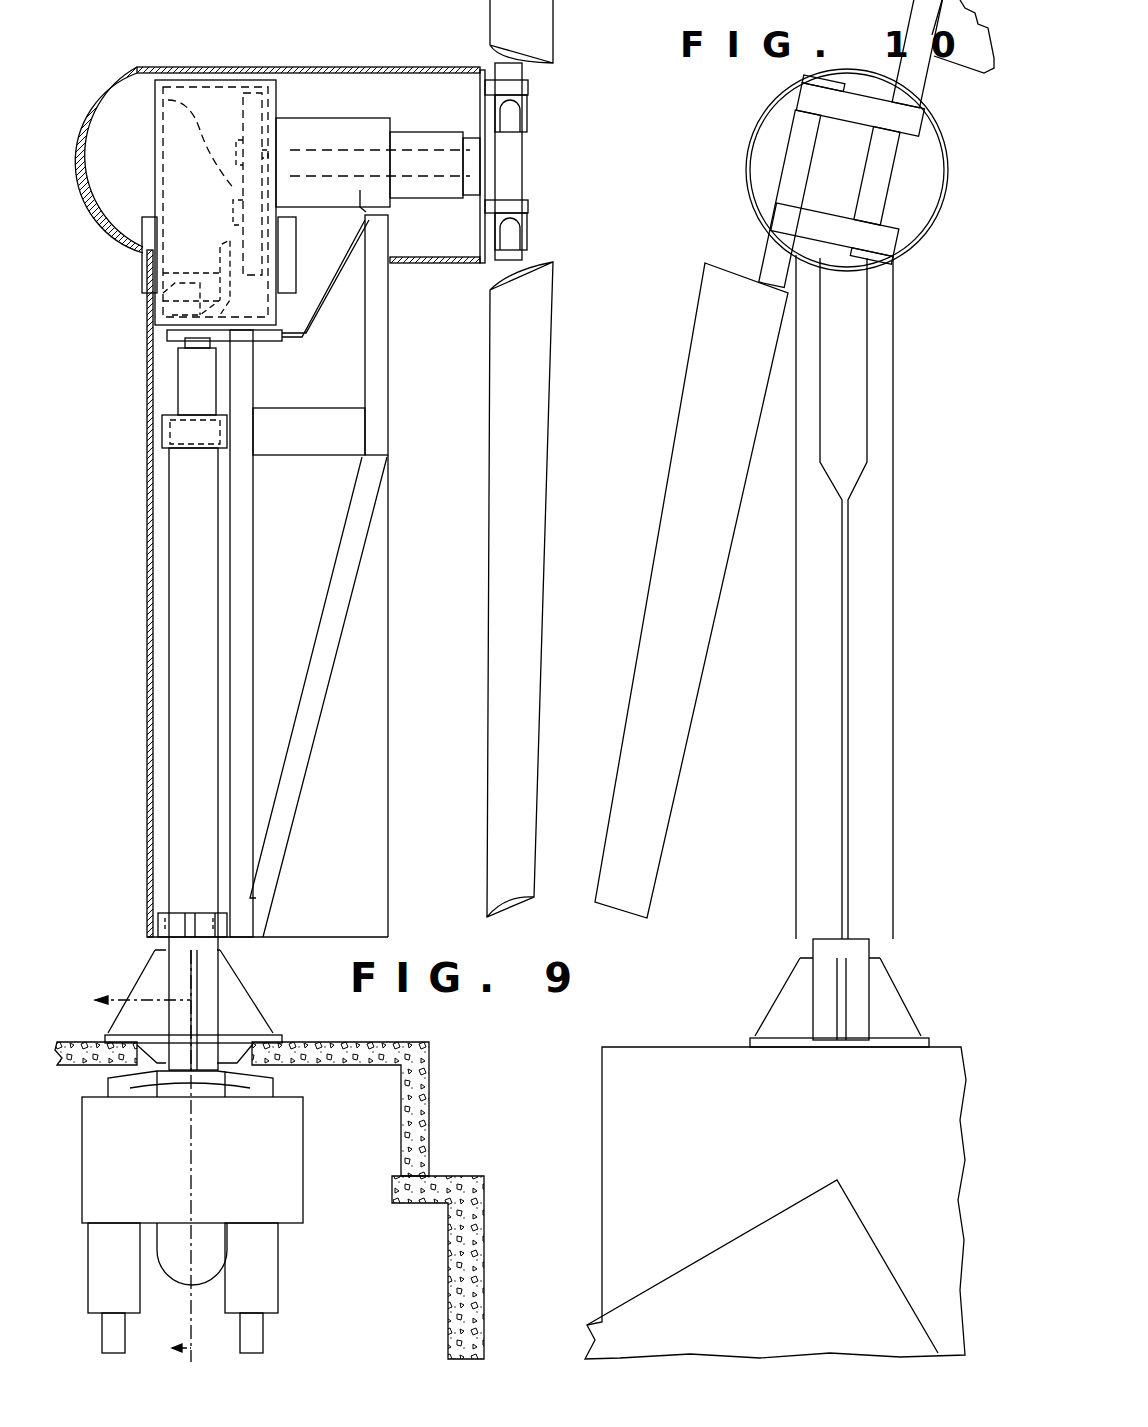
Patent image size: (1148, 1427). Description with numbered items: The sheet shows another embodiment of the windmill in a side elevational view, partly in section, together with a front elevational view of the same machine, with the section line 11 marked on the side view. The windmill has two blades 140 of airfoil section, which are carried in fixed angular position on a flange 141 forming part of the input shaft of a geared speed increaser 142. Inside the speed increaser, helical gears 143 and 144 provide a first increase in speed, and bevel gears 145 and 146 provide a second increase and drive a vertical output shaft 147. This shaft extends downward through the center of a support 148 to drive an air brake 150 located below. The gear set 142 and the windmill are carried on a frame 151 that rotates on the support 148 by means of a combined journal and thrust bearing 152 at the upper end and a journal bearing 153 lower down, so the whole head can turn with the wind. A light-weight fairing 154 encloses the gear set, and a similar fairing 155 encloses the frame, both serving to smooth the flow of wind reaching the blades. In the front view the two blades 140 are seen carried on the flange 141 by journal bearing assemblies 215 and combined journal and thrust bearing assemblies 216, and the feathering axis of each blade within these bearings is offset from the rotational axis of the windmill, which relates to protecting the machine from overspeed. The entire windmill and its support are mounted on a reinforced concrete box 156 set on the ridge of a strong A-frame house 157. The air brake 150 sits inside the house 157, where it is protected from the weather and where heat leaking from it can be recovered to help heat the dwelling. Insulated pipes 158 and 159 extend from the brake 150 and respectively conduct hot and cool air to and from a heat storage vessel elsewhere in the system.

In FIG. 9, the section line / axis 11 is at (126, 1158).
In FIG. 9, the blades 140 is at (553, 38).
In FIG. 10, the blades 140 is at (675, 800).
In FIG. 9, the flange 141 is at (480, 66).
In FIG. 9, the geared speed increaser 142 is at (348, 118).
In FIG. 9, the helical gear 143 is at (237, 102).
In FIG. 9, the helical gear 144 is at (250, 245).
In FIG. 9, the bevel gear 145 is at (172, 200).
In FIG. 9, the bevel gear 146 is at (168, 300).
In FIG. 9, the vertical output shaft 147 is at (178, 375).
In FIG. 9, the support 148 is at (170, 505).
In FIG. 10, the support 148 is at (811, 982).
In FIG. 9, the air brake 150 is at (303, 1208).
In FIG. 9, the frame 151 is at (340, 655).
In FIG. 9, the combined journal and thrust bearing 152 is at (162, 426).
In FIG. 9, the journal bearing 153 is at (158, 916).
In FIG. 9, the fairing 154 is at (128, 35).
In FIG. 9, the fairing 155 is at (148, 822).
In FIG. 10, the fairing 155 is at (796, 905).
In FIG. 9, the reinforced concrete box 156 is at (429, 1050).
In FIG. 10, the reinforced concrete box 156 is at (703, 1012).
In FIG. 9, the "A" frame house 157 is at (485, 1200).
In FIG. 10, the "A" frame house 157 is at (762, 1266).
In FIG. 9, the insulated pipe 158 is at (127, 1325).
In FIG. 9, the insulated pipe 159 is at (265, 1325).
In FIG. 10, the journal bearing assemblies 215 is at (772, 215).
In FIG. 10, the combined journal and thrust bearing assemblies 216 is at (790, 112).